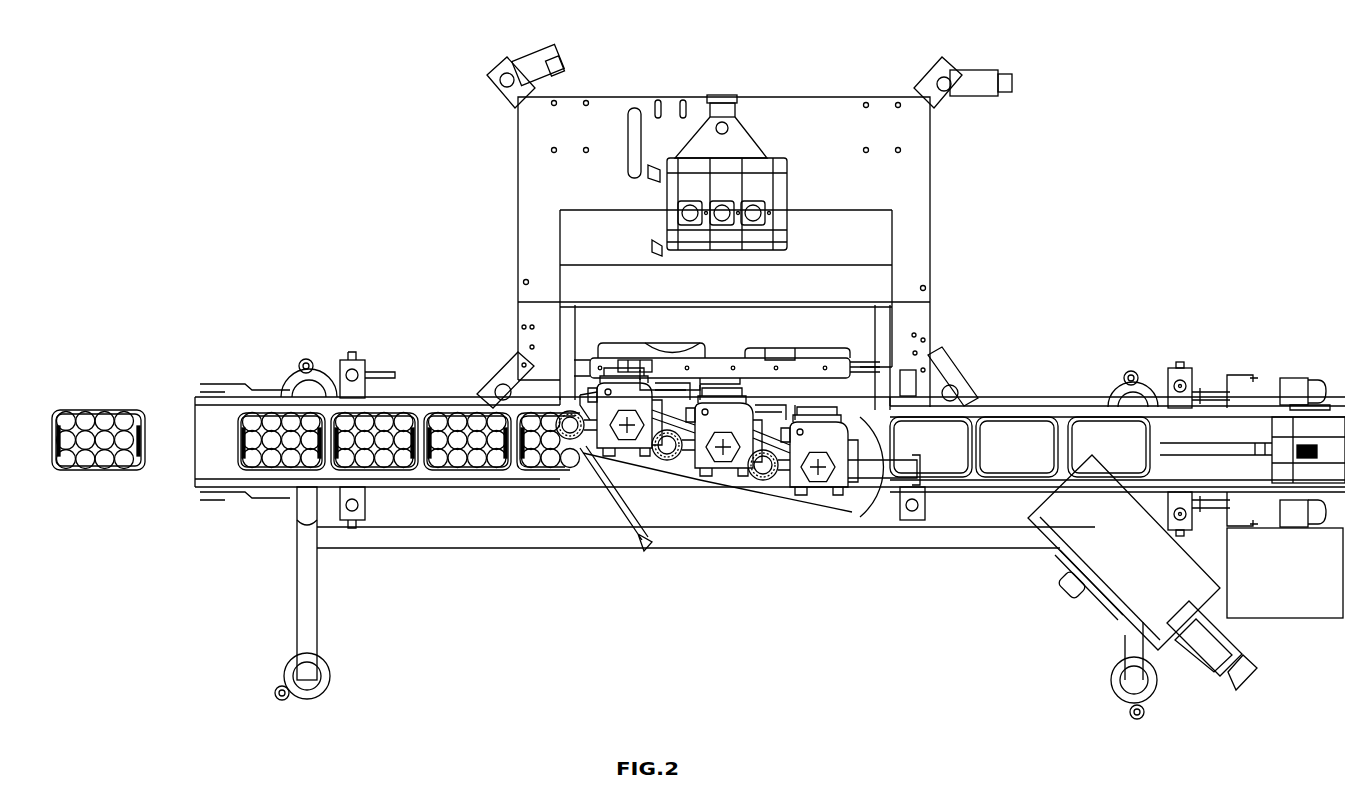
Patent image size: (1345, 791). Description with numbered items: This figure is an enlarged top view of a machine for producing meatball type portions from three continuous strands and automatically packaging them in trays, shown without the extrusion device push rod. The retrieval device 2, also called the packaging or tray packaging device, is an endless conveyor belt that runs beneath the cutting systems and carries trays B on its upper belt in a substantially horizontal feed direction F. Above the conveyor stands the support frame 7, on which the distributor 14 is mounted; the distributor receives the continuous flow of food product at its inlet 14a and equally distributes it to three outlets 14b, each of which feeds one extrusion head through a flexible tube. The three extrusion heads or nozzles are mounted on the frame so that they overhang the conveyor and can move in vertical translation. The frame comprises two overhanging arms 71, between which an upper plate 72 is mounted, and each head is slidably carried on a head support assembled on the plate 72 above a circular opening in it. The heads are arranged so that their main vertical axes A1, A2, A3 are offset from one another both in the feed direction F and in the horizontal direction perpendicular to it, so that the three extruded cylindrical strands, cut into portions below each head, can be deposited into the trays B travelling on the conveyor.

The retrieval device 2 is at (440, 498).
The support frame 7 is at (930, 181).
The overhanging arms 71 is at (885, 412).
The upper plate 72 is at (690, 478).
The distributor 14 is at (737, 150).
The inlet of the distributor 14a is at (714, 93).
The outlets of the distributor 14b is at (757, 205).
The main vertical axis A1 is at (818, 470).
The main vertical axis A2 is at (723, 450).
The main vertical axis A3 is at (627, 430).
The product P is at (72, 418).
The trays B is at (98, 444).
The feed direction F is at (103, 398).